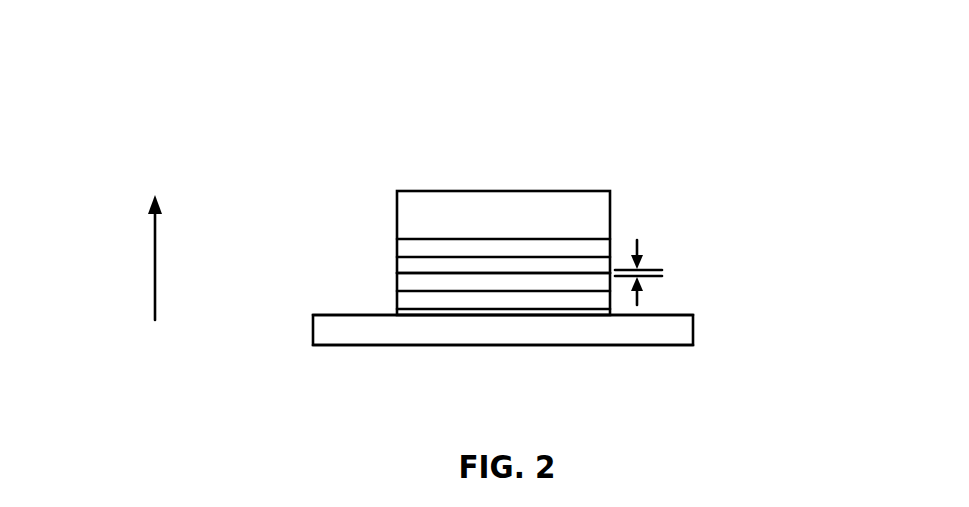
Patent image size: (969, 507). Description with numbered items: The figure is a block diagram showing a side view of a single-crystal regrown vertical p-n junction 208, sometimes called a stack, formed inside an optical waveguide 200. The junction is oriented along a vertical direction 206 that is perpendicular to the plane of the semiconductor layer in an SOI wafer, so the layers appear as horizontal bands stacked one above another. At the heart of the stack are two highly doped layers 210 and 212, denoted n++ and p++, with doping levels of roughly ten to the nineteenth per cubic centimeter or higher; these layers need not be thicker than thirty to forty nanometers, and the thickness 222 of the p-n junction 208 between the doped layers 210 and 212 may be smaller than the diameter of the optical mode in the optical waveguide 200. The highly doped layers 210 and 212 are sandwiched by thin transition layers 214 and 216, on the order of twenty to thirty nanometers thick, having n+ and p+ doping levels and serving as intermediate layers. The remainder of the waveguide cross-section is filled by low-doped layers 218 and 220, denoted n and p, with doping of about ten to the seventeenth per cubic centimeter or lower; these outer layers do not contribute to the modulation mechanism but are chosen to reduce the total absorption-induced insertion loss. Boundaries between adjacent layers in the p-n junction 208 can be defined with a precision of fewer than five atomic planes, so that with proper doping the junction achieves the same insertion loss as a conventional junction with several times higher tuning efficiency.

The optical waveguide 200 is at (345, 55).
The vertical direction 206 is at (155, 258).
The vertical p-n junction 208 is at (568, 271).
The highly doped layer 210 is at (408, 266).
The highly doped layer 212 is at (405, 282).
The transition layer 214 is at (564, 249).
The transition layer 216 is at (563, 302).
The low-doped layer 218 is at (502, 207).
The low-doped layer 220 is at (487, 327).
The thickness 222 is at (663, 272).